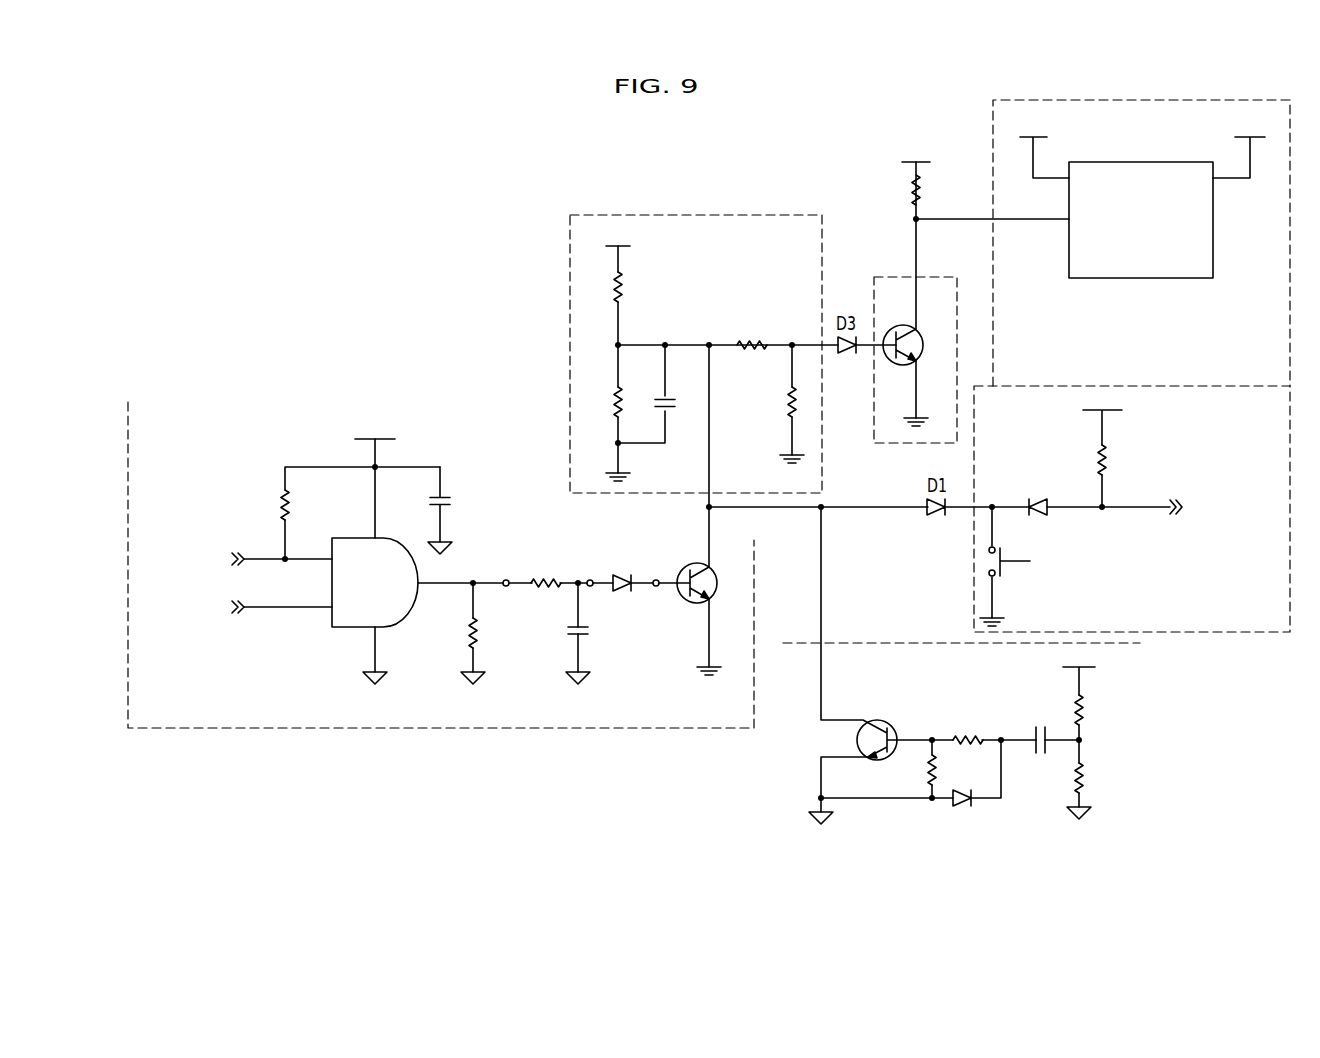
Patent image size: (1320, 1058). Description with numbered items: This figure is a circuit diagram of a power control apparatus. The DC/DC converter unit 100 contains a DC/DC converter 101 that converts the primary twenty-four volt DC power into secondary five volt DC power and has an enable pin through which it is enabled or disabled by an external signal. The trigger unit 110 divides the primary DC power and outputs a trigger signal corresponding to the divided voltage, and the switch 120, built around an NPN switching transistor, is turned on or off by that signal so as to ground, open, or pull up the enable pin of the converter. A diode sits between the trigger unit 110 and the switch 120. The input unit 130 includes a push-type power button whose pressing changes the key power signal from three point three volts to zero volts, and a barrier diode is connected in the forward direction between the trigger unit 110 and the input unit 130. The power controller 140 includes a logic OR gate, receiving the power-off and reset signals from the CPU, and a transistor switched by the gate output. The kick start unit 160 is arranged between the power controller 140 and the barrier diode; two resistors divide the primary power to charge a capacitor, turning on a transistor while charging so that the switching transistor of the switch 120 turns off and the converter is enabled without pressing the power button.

The DC/DC converter unit 100 is at (993, 118).
The DC/DC converter 101 is at (1143, 162).
The trigger unit 110 is at (722, 213).
The switch 120 is at (958, 361).
The input unit 130 is at (1184, 386).
The power controller 140 is at (322, 400).
The kick start unit 160 is at (1138, 748).